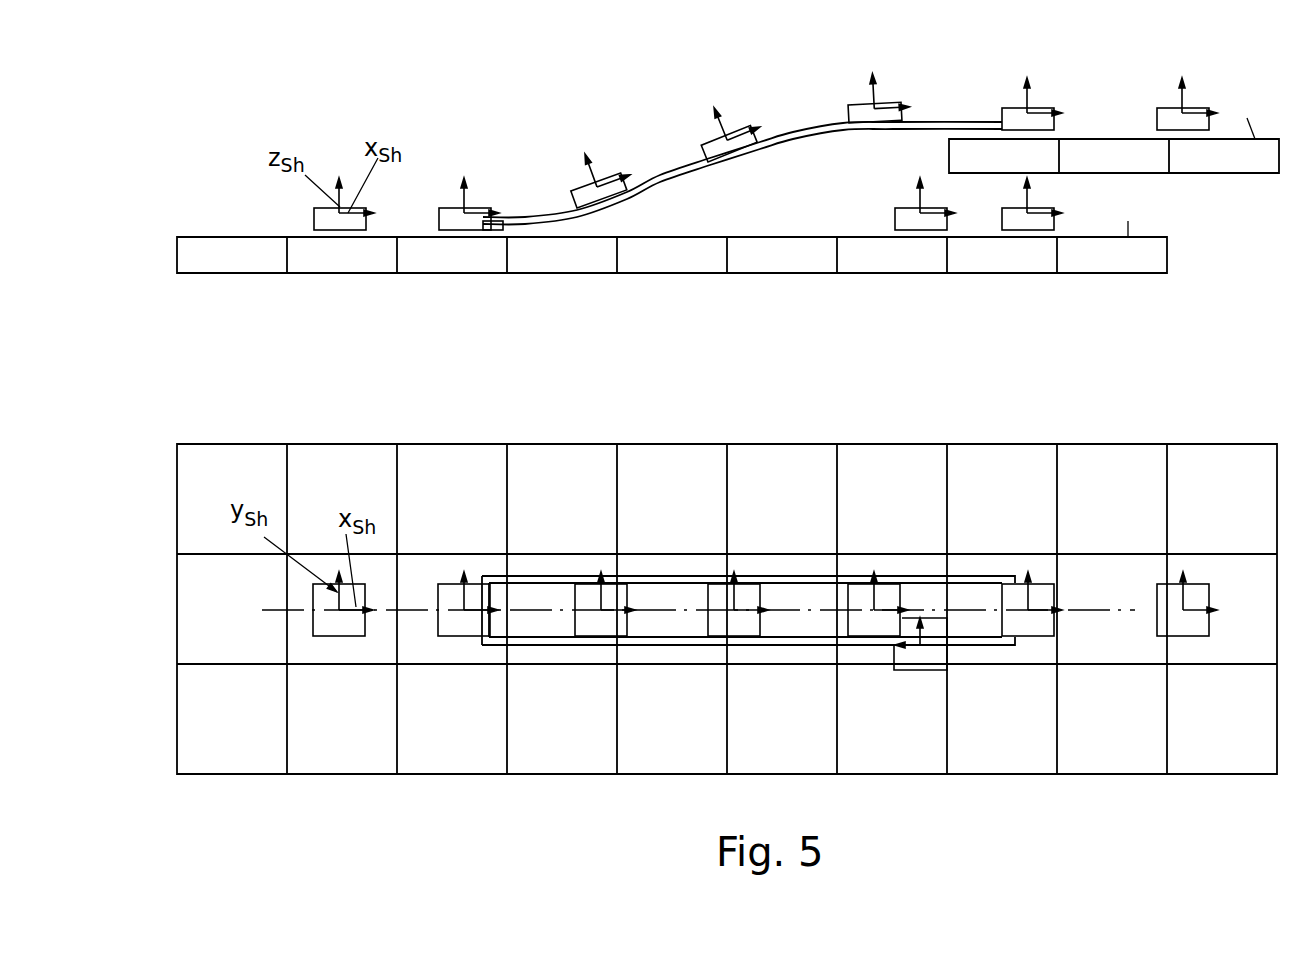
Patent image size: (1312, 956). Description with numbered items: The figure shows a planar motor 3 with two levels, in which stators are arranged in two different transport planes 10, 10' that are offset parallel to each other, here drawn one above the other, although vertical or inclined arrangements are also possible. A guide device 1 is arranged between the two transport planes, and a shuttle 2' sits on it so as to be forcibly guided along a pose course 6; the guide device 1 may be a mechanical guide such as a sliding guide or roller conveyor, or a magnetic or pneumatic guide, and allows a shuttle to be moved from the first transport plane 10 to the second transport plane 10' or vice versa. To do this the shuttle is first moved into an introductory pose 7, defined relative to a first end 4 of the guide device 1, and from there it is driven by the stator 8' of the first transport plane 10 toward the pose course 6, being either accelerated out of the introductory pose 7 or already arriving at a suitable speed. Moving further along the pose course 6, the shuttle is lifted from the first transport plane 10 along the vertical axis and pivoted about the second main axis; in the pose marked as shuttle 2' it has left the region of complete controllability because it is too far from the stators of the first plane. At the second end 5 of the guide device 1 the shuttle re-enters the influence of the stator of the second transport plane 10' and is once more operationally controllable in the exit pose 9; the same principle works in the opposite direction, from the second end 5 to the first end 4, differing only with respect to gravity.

The guide device 1 is at (787, 583).
The shuttle 2' is at (722, 346).
The planar motor 3 is at (143, 775).
The first end of the guide device 4 is at (503, 228).
The second end of the guide device 5 is at (1013, 128).
The pose course 6 is at (552, 605).
The introductory pose 7 is at (450, 585).
The stator 8' is at (672, 540).
The exit pose 9 is at (1022, 583).
The first transport plane 10 is at (1198, 218).
The second transport plane 10' is at (1274, 93).